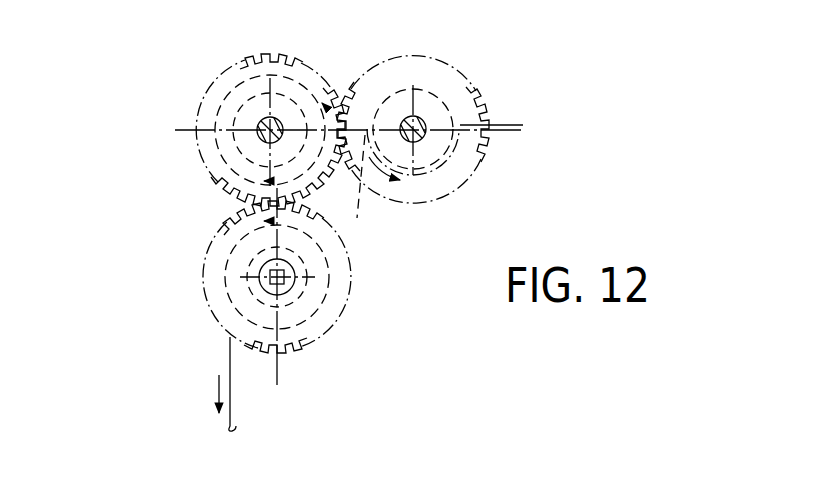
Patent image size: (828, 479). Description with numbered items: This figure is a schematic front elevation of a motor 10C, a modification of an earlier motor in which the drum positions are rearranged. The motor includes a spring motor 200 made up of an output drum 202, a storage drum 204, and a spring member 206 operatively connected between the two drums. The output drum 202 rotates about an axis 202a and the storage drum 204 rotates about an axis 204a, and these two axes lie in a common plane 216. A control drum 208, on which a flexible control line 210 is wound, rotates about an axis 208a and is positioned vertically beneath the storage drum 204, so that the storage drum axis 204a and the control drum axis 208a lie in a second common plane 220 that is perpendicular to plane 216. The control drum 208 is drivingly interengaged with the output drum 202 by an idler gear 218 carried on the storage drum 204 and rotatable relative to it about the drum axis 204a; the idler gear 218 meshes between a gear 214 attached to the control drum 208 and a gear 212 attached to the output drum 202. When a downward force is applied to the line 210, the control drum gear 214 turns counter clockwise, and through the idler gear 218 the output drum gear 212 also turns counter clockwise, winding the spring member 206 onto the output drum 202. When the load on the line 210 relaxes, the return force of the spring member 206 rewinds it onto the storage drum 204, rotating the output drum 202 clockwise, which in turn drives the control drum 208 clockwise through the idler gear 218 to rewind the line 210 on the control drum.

The motor 10C is at (150, 72).
The spring motor 200 is at (340, 62).
The output drum 202 is at (487, 75).
The axis 202a is at (418, 135).
The storage drum 204 is at (185, 157).
The axis 204a is at (268, 128).
The spring member 206 is at (382, 194).
The control drum 208 is at (195, 293).
The axis 208a is at (283, 282).
The flexible control line 210 is at (233, 408).
The gear 212 is at (487, 137).
The gear 214 is at (300, 355).
The common plane 216 is at (507, 122).
The idler gear 218 is at (265, 55).
The common plane 220 is at (279, 372).